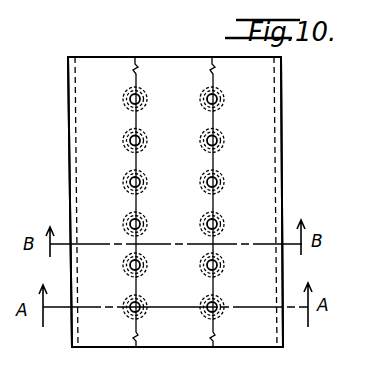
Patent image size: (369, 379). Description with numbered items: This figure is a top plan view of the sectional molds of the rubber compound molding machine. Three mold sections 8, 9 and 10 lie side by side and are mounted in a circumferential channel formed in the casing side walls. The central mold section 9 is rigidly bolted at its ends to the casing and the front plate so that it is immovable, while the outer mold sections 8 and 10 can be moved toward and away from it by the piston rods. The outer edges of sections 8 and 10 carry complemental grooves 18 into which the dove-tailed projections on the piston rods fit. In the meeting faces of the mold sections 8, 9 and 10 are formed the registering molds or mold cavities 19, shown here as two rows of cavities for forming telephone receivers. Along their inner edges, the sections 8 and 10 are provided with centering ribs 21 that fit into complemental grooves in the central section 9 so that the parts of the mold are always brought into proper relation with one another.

The mold section 8 is at (98, 332).
The central mold section 9 is at (165, 332).
The mold section 10 is at (258, 330).
The grooves 18 is at (68, 99).
The molds or mold cavities 19 is at (130, 140).
The centering rib 21 is at (209, 71).